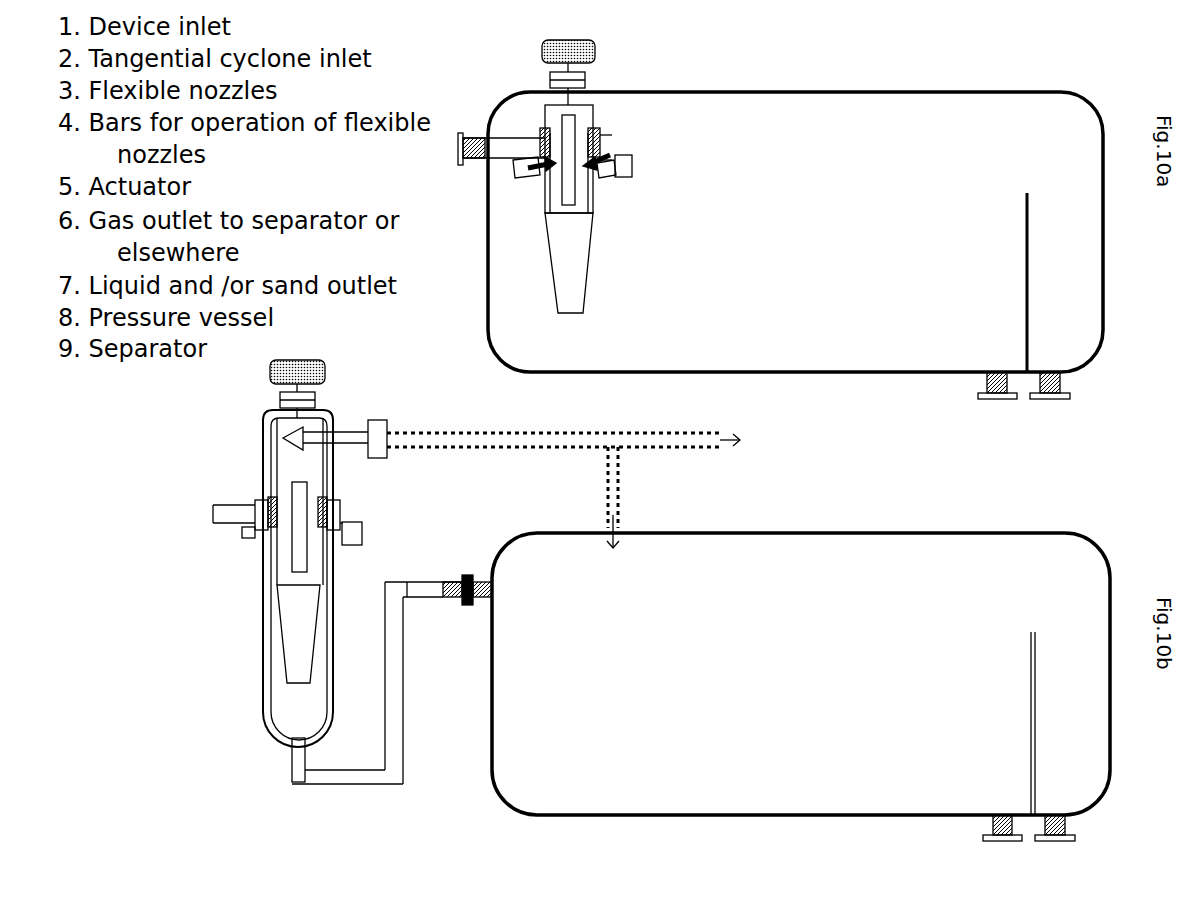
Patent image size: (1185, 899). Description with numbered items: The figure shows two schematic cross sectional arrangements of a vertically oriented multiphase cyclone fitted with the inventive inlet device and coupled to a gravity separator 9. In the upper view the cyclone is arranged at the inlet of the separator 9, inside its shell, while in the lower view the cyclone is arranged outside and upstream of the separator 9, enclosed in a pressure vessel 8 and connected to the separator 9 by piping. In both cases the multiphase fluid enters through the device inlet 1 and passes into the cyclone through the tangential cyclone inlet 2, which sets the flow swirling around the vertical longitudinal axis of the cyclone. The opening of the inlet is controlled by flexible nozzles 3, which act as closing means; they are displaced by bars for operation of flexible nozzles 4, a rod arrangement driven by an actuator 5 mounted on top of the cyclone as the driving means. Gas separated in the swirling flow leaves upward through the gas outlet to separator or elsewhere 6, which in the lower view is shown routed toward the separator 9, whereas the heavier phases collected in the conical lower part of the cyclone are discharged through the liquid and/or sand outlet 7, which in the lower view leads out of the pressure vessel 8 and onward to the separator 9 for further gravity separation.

In FIG. 10A, the device inlet 1 is at (488, 149).
In FIG. 10B, the device inlet 1 is at (227, 519).
In FIG. 10A, the tangential cyclone inlet 2 is at (530, 165).
In FIG. 10B, the tangential cyclone inlet 2 is at (262, 536).
In FIG. 10A, the flexible nozzles 3 is at (530, 124).
In FIG. 10B, the flexible nozzles 3 is at (262, 493).
In FIG. 10A, the bars for operation of flexible nozzles 4 is at (534, 92).
In FIG. 10B, the bars for operation of flexible nozzles 4 is at (262, 436).
In FIG. 10A, the actuator 5 is at (568, 59).
In FIG. 10B, the actuator 5 is at (298, 374).
In FIG. 10A, the gas outlet to separator or elsewhere 6 is at (580, 122).
In FIG. 10B, the gas outlet to separator or elsewhere 6 is at (511, 486).
In FIG. 10A, the liquid and/or sand outlet 7 is at (575, 218).
In FIG. 10B, the liquid and/or sand outlet 7 is at (380, 607).
In FIG. 10B, the pressure vessel 8 is at (282, 578).
In FIG. 10A, the separator 9 is at (795, 245).
In FIG. 10B, the separator 9 is at (801, 687).